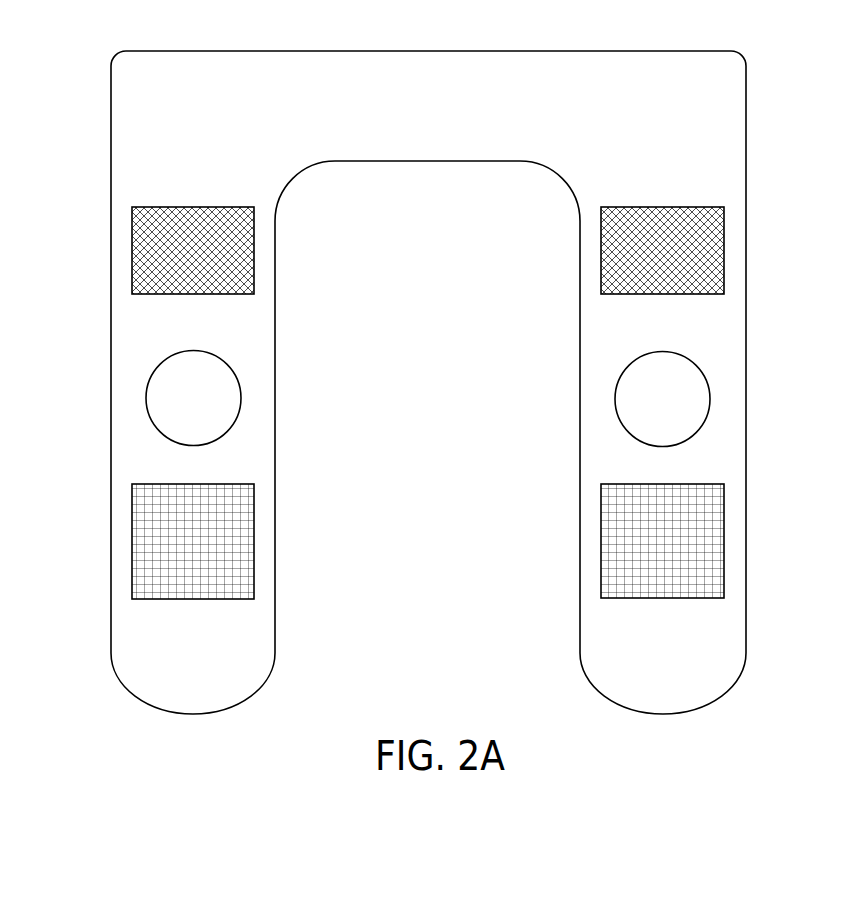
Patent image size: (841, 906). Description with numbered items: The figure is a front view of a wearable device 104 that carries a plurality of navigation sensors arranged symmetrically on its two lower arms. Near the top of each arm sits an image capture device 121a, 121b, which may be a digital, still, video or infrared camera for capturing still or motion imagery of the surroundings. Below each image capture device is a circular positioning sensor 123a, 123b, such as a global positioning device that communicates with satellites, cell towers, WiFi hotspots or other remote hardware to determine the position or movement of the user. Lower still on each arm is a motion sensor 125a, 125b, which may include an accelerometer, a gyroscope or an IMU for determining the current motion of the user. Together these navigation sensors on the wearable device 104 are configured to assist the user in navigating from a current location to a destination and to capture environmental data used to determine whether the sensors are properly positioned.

The wearable device 104 is at (746, 111).
The image capture device 121a is at (132, 238).
The image capture device 121b is at (724, 238).
The positioning sensor 123a is at (146, 398).
The positioning sensor 123b is at (710, 399).
The motion sensor 125a is at (132, 540).
The motion sensor 125b is at (724, 540).